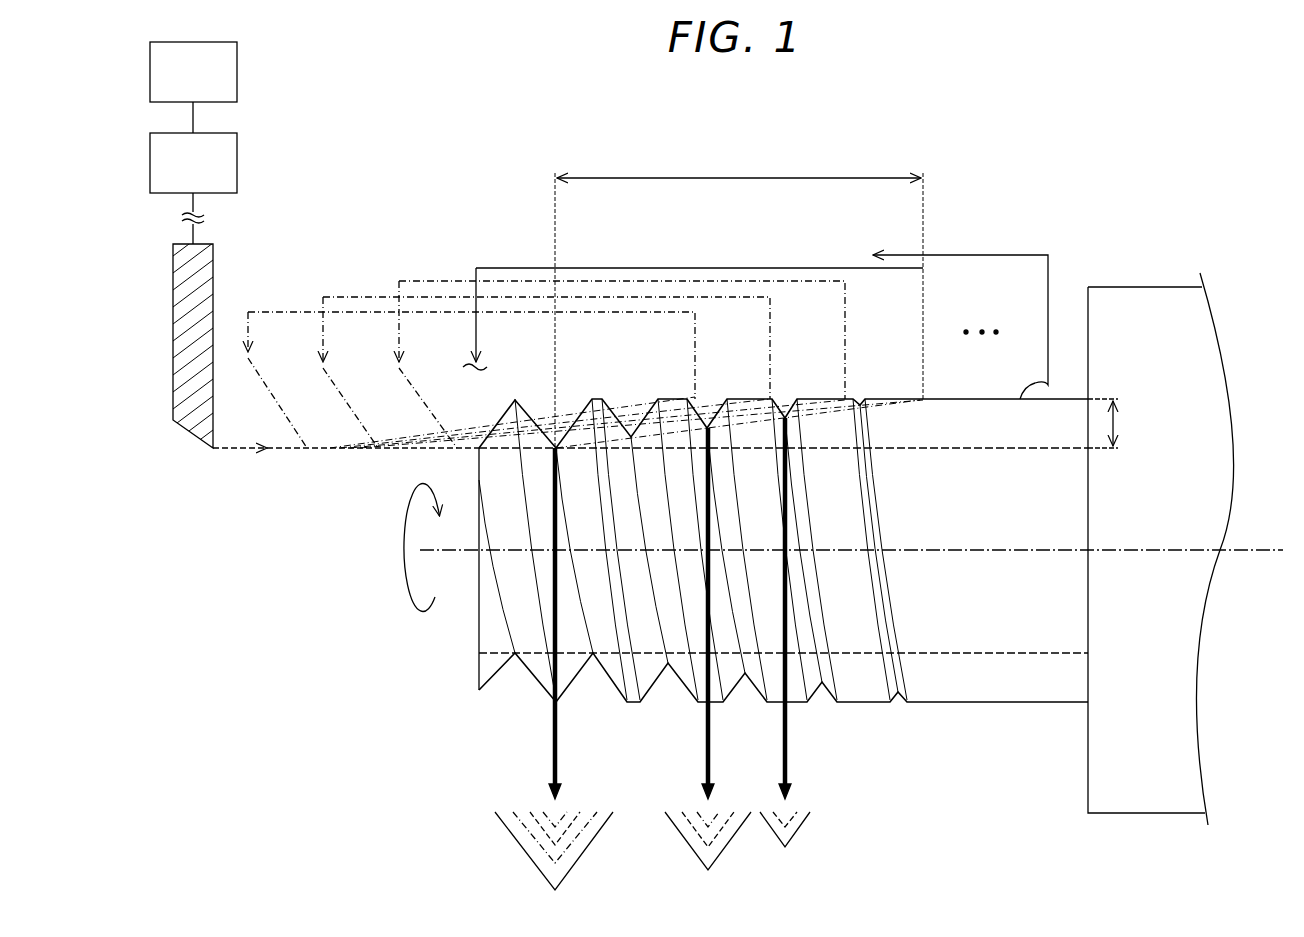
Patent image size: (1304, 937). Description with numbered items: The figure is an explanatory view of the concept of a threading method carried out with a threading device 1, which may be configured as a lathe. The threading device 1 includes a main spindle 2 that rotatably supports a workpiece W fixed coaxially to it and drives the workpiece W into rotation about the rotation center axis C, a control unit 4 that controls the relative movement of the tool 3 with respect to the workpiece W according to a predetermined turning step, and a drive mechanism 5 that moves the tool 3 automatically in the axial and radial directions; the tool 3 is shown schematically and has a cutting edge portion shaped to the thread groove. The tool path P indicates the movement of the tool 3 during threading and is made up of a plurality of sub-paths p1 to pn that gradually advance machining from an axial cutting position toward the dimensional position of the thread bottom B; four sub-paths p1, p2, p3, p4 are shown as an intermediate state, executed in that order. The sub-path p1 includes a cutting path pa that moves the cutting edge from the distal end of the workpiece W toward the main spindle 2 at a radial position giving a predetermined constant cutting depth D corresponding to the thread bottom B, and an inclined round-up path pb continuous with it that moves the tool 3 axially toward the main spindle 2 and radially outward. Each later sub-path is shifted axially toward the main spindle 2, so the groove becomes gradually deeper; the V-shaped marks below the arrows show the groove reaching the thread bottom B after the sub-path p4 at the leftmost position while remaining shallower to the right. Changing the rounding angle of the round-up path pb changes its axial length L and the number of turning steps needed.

The threading device 1 is at (1180, 196).
The main spindle 2 is at (1143, 806).
The tool 3 is at (173, 318).
The control unit 4 is at (150, 72).
The drive mechanism 5 is at (150, 165).
The workpiece W is at (478, 702).
The thread bottom B is at (1020, 450).
The rotation center axis C is at (1257, 550).
The cutting depth D is at (1112, 423).
The axial length of the round-up path L is at (739, 298).
The tool path P is at (717, 266).
The cutting path pa is at (233, 452).
The round-up path pb is at (410, 453).
The sub-path p1 is at (283, 312).
The sub-path p2 is at (355, 297).
The sub-path p3 is at (437, 281).
The sub-path p4 is at (512, 268).
The sub-path pn is at (985, 255).